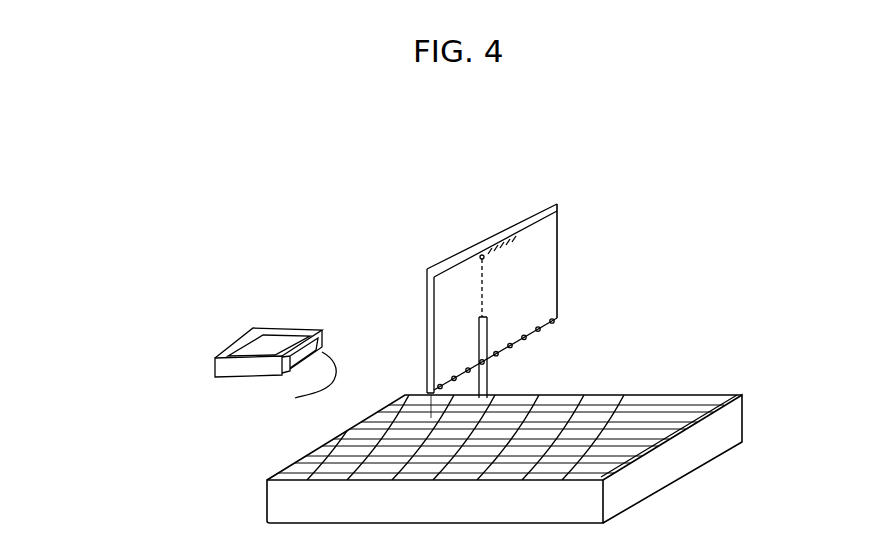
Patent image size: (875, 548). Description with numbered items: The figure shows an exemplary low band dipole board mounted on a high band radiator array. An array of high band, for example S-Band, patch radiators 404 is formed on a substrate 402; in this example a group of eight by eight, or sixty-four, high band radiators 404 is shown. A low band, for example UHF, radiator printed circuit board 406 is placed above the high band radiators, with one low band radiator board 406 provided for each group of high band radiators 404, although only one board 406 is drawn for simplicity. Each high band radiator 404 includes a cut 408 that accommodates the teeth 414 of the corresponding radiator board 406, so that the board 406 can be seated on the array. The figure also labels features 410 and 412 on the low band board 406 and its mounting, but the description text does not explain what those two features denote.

The substrate 402 is at (748, 420).
The high band patch radiator 404 is at (233, 338).
The low band radiator printed circuit board 406 is at (557, 237).
The cut 408 is at (293, 385).
The support post 410 is at (492, 361).
The slot 412 is at (484, 271).
The teeth 414 is at (548, 323).